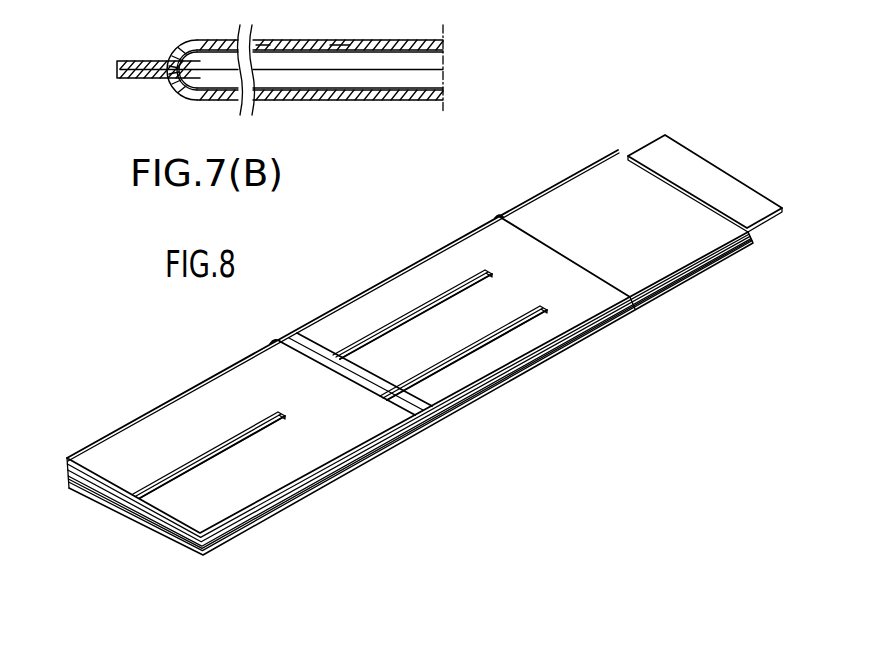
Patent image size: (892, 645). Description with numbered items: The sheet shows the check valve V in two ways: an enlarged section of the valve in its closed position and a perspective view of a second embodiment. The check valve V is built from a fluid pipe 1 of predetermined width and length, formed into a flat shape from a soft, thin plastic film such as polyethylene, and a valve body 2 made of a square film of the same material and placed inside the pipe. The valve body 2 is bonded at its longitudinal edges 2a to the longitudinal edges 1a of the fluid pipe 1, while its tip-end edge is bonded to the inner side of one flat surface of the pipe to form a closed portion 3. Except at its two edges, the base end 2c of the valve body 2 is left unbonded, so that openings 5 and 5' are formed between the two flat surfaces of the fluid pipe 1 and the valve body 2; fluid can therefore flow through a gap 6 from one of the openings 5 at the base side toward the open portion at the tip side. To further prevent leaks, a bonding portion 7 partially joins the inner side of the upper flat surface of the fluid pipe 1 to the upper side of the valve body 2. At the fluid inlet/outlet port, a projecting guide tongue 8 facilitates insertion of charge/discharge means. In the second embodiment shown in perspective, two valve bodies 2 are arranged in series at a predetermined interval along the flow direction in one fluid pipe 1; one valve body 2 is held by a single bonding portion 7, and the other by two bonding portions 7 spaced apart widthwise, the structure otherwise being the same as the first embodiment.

In FIG. 8, the fluid pipe 1 is at (561, 205).
In FIG. 8, the longitudinal edges of the fluid pipe 1a is at (408, 267).
In FIG. 7B, the valve body 2 is at (182, 0).
In FIG. 8, the valve body 2 is at (173, 541).
In FIG. 8, the longitudinal edges of the valve body 2a is at (480, 393).
In FIG. 8, the base end of the valve body 2c is at (141, 522).
In FIG. 7B, the closed portion 3 is at (305, 70).
In FIG. 8, the opening 5 is at (406, 421).
In FIG. 8, the opening 5' is at (409, 404).
In FIG. 7B, the gap 6 is at (278, 42).
In FIG. 7B, the bonding portion 7 is at (345, 43).
In FIG. 8, the bonding portion 7 is at (237, 447).
In FIG. 8, the guide tongue 8 is at (675, 157).
In FIG. 7B, the check valve V is at (404, 35).
In FIG. 8, the check valve V is at (476, 221).